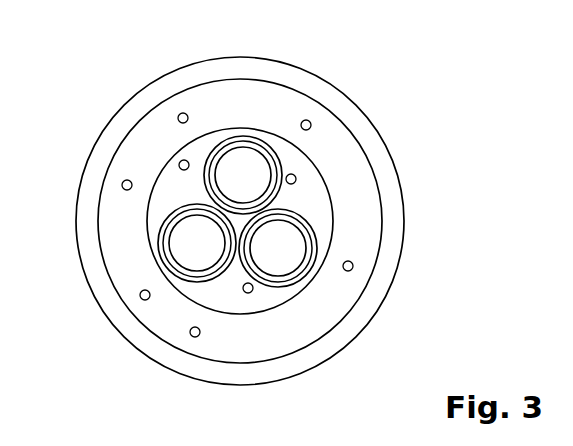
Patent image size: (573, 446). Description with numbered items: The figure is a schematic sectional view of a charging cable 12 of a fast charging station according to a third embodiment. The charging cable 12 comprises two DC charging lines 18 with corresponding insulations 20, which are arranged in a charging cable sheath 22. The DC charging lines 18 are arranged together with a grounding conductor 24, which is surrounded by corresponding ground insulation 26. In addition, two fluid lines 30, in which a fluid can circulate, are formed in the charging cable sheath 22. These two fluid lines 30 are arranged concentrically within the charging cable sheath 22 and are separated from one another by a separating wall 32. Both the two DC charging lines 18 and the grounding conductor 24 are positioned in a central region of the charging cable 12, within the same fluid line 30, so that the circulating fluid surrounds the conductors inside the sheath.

The charging cable 12 is at (79, 133).
The DC charging lines 18 is at (195, 262).
The insulations 20 is at (155, 222).
The charging cable sheath 22 is at (345, 328).
The grounding conductor 24 is at (242, 158).
The ground insulation 26 is at (202, 153).
The fluid lines 30 is at (310, 190).
The separating wall 32 is at (267, 130).